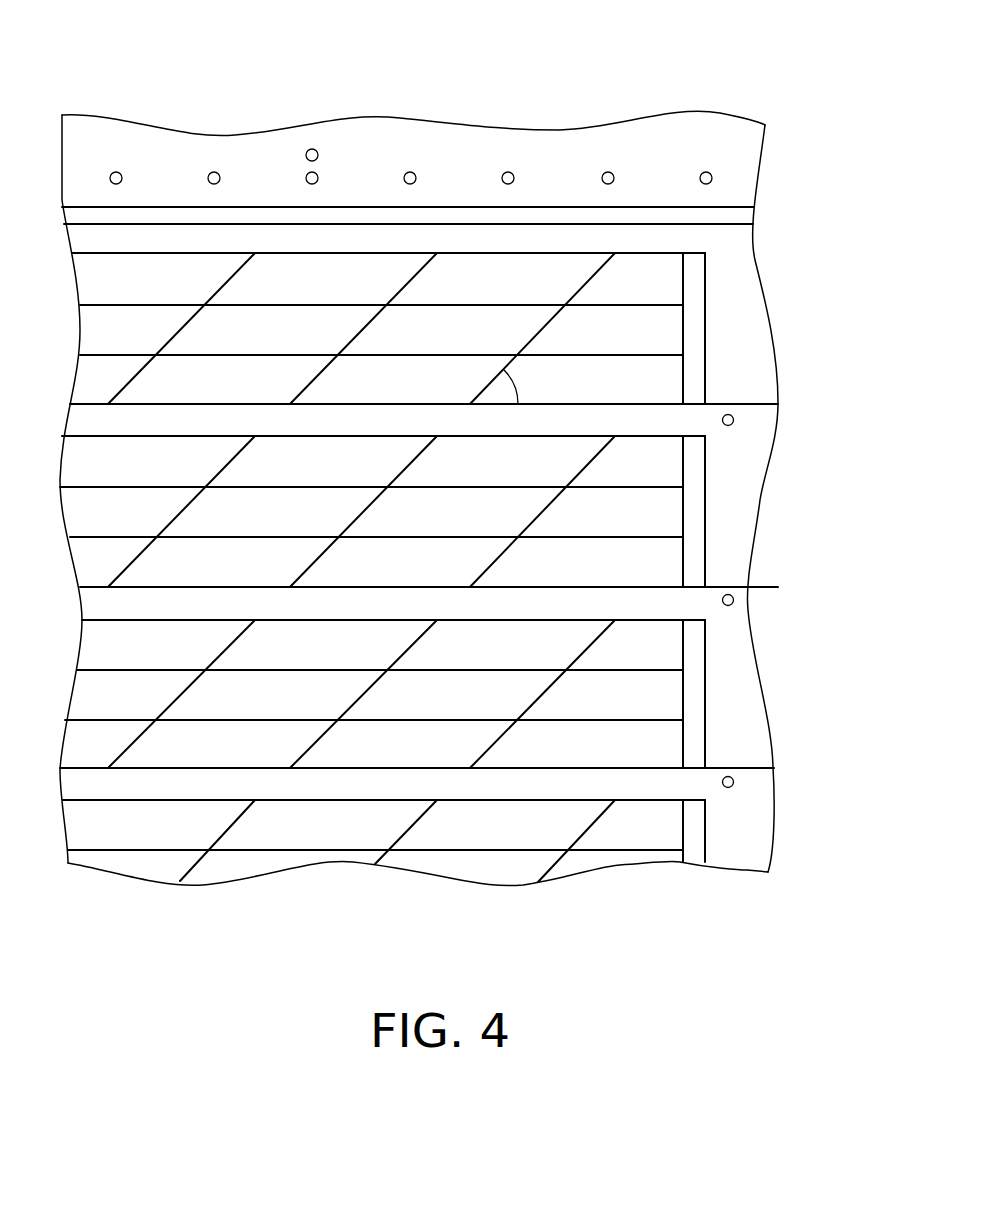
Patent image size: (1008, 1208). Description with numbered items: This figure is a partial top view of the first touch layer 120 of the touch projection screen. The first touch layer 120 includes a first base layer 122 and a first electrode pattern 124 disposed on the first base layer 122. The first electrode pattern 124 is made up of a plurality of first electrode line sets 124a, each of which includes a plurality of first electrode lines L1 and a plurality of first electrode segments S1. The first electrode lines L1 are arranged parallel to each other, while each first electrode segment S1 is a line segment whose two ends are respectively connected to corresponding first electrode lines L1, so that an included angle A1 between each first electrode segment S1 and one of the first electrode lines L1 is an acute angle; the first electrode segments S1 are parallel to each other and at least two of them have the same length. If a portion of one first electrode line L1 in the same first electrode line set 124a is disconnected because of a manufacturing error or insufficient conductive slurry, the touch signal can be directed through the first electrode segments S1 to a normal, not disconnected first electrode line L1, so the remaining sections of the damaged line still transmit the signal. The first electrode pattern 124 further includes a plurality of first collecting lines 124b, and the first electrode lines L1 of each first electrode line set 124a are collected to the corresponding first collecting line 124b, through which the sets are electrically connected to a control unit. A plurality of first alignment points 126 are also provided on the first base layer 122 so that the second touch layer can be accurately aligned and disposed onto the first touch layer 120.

The first touch layer 120 is at (460, 476).
The first base layer 122 is at (737, 168).
The first electrode pattern 124 is at (460, 460).
The first electrode line set 124a is at (463, 222).
The first collecting line 124b is at (752, 407).
The first alignment point 126 is at (411, 171).
The first electrode segment S1 is at (583, 286).
The first electrode line L1 is at (668, 253).
The included angle A1 is at (527, 383).